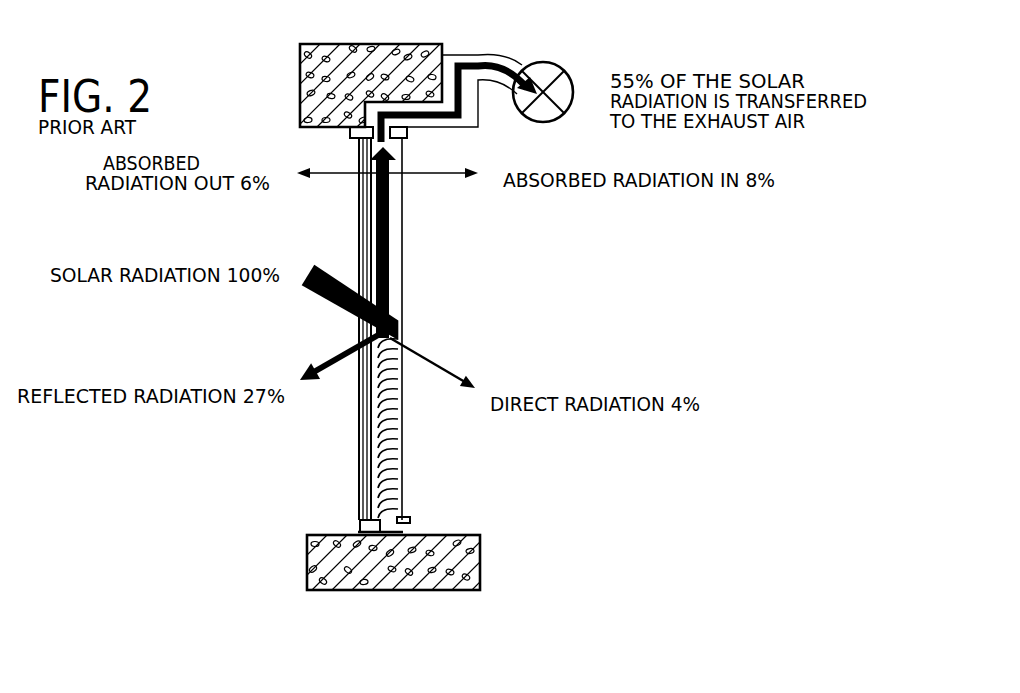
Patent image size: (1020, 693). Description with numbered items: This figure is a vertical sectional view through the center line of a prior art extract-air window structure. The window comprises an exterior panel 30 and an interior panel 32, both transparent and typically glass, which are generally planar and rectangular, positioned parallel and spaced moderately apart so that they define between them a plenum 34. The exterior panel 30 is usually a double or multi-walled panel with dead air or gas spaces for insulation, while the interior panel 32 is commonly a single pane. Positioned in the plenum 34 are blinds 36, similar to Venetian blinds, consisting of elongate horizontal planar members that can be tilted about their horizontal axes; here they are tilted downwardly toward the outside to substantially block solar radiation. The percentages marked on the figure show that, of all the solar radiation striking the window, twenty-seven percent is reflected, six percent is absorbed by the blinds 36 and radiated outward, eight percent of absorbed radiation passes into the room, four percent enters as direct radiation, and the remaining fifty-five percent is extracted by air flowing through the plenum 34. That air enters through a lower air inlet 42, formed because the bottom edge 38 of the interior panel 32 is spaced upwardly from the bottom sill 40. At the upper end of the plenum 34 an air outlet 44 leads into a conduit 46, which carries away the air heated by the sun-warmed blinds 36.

The exterior panel 30 is at (362, 417).
The interior panel 32 is at (405, 408).
The plenum 34 is at (392, 383).
The blinds 36 is at (392, 418).
The bottom edge 38 is at (405, 522).
The bottom sill 40 is at (450, 532).
The lower air inlet 42 is at (411, 525).
The air outlet 44 is at (410, 132).
The conduit 46 is at (546, 68).